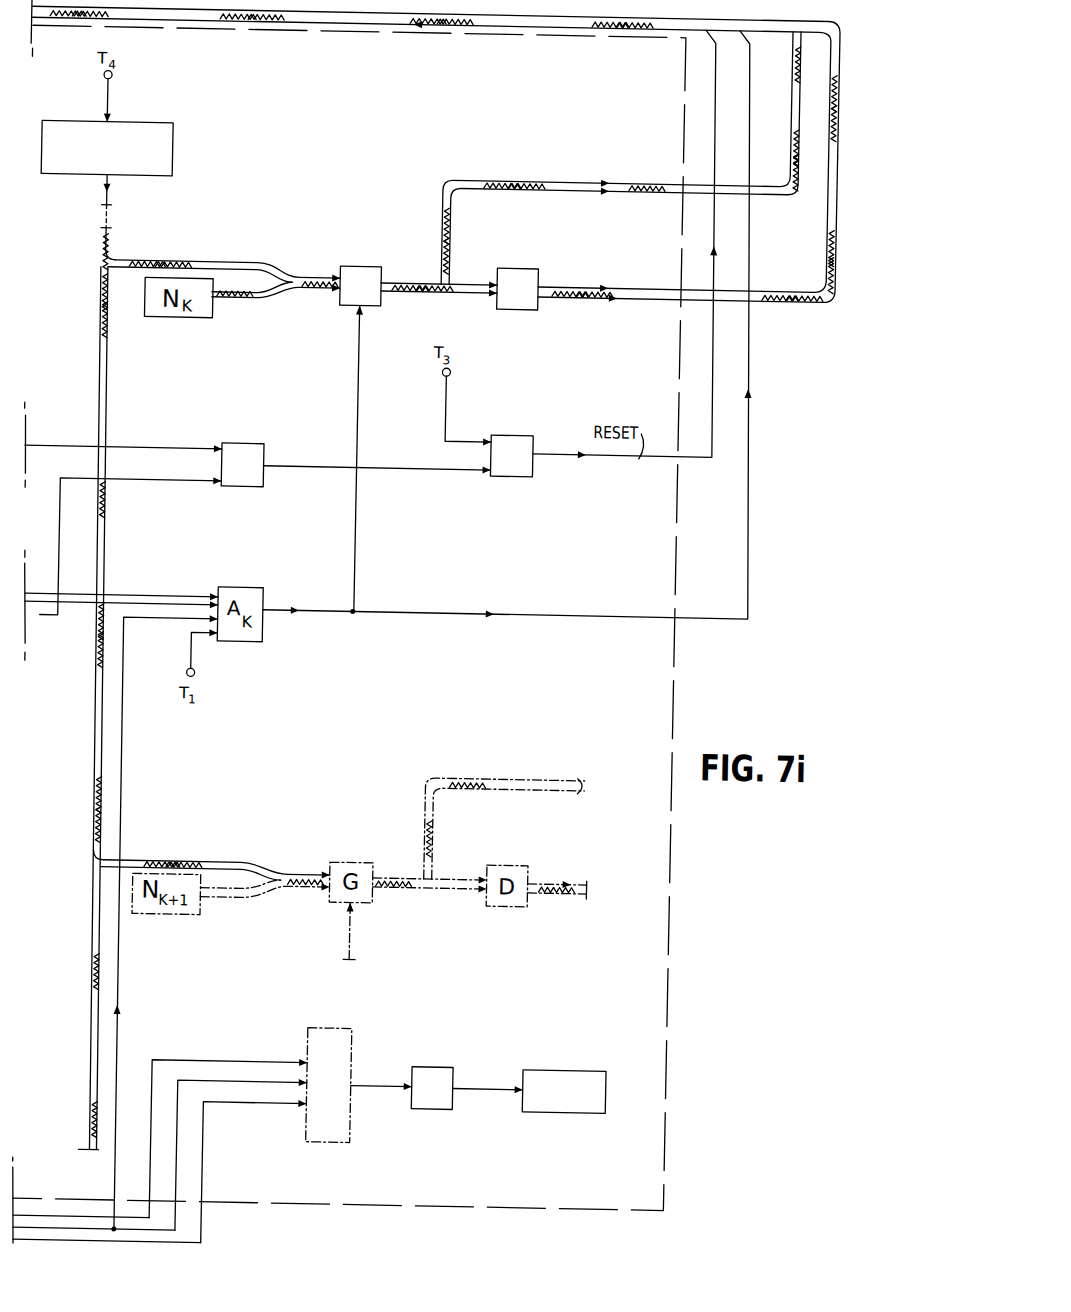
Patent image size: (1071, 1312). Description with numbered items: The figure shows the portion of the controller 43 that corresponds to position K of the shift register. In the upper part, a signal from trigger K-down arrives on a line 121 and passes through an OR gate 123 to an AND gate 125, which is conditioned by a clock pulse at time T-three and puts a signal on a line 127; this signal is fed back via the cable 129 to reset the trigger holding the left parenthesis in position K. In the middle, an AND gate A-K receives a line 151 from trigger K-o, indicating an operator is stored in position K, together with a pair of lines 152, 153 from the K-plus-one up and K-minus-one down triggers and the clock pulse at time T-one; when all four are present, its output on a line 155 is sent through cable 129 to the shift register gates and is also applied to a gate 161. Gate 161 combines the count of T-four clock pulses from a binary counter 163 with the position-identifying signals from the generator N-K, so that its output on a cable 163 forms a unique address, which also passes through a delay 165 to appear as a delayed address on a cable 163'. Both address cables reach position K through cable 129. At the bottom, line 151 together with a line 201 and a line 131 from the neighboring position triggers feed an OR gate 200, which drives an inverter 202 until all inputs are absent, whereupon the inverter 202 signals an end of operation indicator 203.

The cable 129 is at (325, 27).
The controller 43 is at (676, 84).
The binary counter 163 is at (129, 174).
The gate 161 is at (359, 269).
The delay 165 is at (525, 269).
The cable 163' is at (687, 242).
The OR gate 123 is at (256, 449).
The AND gate 125 is at (516, 439).
The line 127 is at (563, 455).
The line 155 is at (351, 407).
The line 152 is at (72, 602).
The line 153 is at (85, 612).
The line 121 is at (42, 626).
The line 151 is at (124, 983).
The OR gate 200 is at (362, 1067).
The line 201 is at (222, 1068).
The inverter 202 is at (447, 1069).
The end of operation indicator 203 is at (592, 1071).
The line 131 is at (213, 1238).